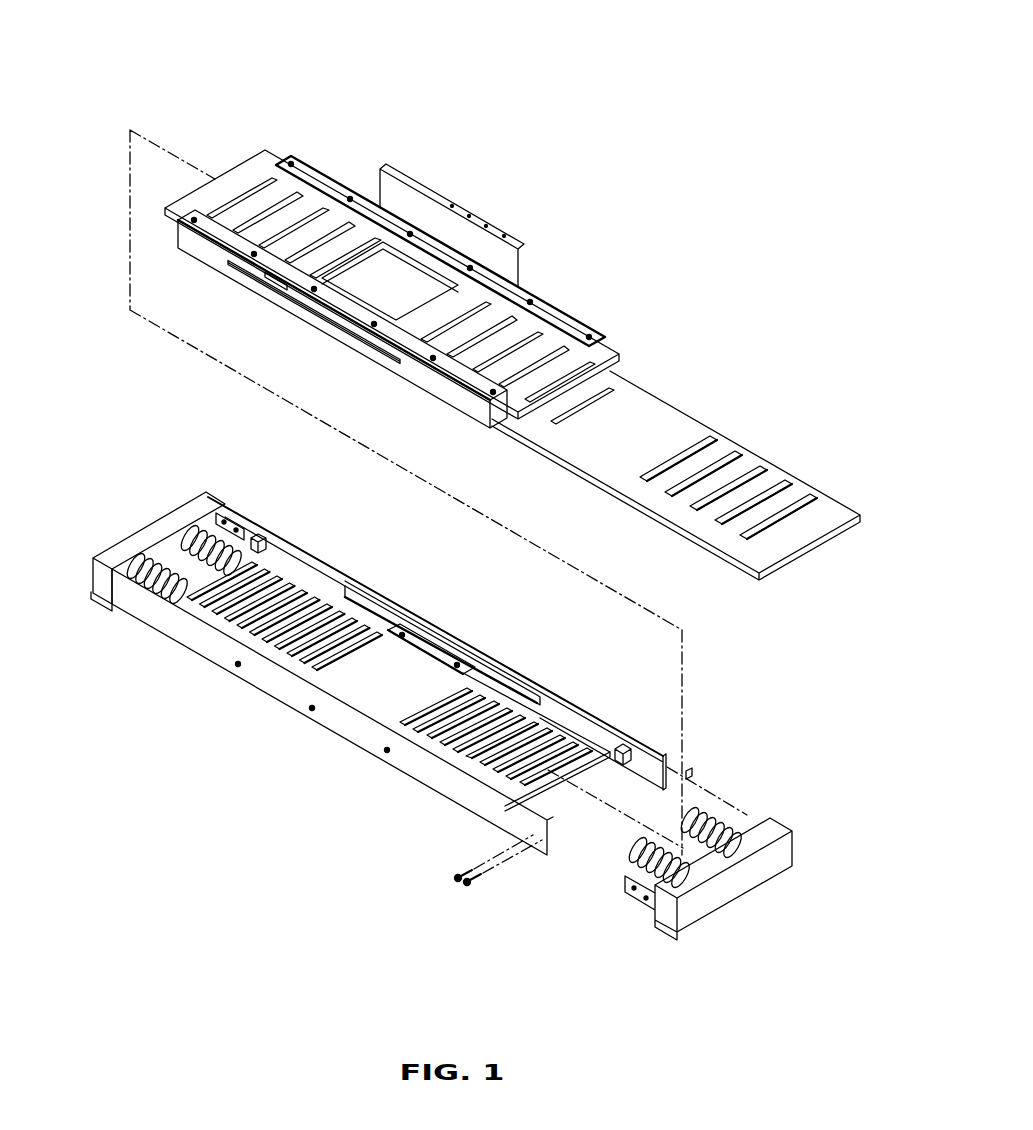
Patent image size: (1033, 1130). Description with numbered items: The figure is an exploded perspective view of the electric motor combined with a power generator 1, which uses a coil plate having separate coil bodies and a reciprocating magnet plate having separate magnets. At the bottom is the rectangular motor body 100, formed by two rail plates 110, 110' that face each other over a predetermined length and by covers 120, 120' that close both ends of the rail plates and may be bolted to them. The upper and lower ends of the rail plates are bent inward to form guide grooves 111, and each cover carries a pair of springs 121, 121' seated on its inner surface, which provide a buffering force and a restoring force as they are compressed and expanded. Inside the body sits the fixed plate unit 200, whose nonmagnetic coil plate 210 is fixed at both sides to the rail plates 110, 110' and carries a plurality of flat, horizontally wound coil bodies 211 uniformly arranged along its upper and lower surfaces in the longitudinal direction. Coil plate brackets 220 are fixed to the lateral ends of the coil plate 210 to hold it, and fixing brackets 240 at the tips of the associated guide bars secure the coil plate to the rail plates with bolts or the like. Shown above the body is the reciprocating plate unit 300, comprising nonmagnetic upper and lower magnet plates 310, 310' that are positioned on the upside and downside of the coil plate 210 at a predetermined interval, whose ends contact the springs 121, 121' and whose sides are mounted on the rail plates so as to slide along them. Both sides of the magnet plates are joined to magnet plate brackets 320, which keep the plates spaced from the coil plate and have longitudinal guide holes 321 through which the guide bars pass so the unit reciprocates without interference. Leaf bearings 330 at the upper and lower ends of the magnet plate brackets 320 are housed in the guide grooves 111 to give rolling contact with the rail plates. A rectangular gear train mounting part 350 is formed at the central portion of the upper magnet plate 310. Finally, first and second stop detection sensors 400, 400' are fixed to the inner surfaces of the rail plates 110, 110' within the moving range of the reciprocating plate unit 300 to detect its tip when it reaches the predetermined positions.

The electric motor combined with a power generator 1 is at (136, 17).
The motor body 100 is at (174, 671).
The rail plate 110 is at (437, 643).
The rail plate 110' is at (332, 712).
The guide groove 111 is at (692, 770).
The cover 120 is at (725, 908).
The cover 120' is at (143, 529).
The spring 121 is at (740, 808).
The spring 121' is at (174, 518).
The fixed plate unit 200 is at (579, 711).
The coil plate 210 is at (550, 805).
The coil body 211 is at (503, 707).
The coil plate bracket 220 is at (432, 653).
The fixing bracket 240 is at (395, 598).
The reciprocating plate unit 300 is at (580, 228).
The upper magnet plate 310 is at (392, 250).
The lower magnet plate 310' is at (676, 459).
The magnet plate bracket 320 is at (437, 385).
The guide hole 321 is at (315, 303).
The leaf bearing 330 is at (470, 215).
The gear train mounting part 350 is at (397, 262).
The first stop detection sensor 400 is at (681, 706).
The second stop detection sensor 400' is at (281, 507).